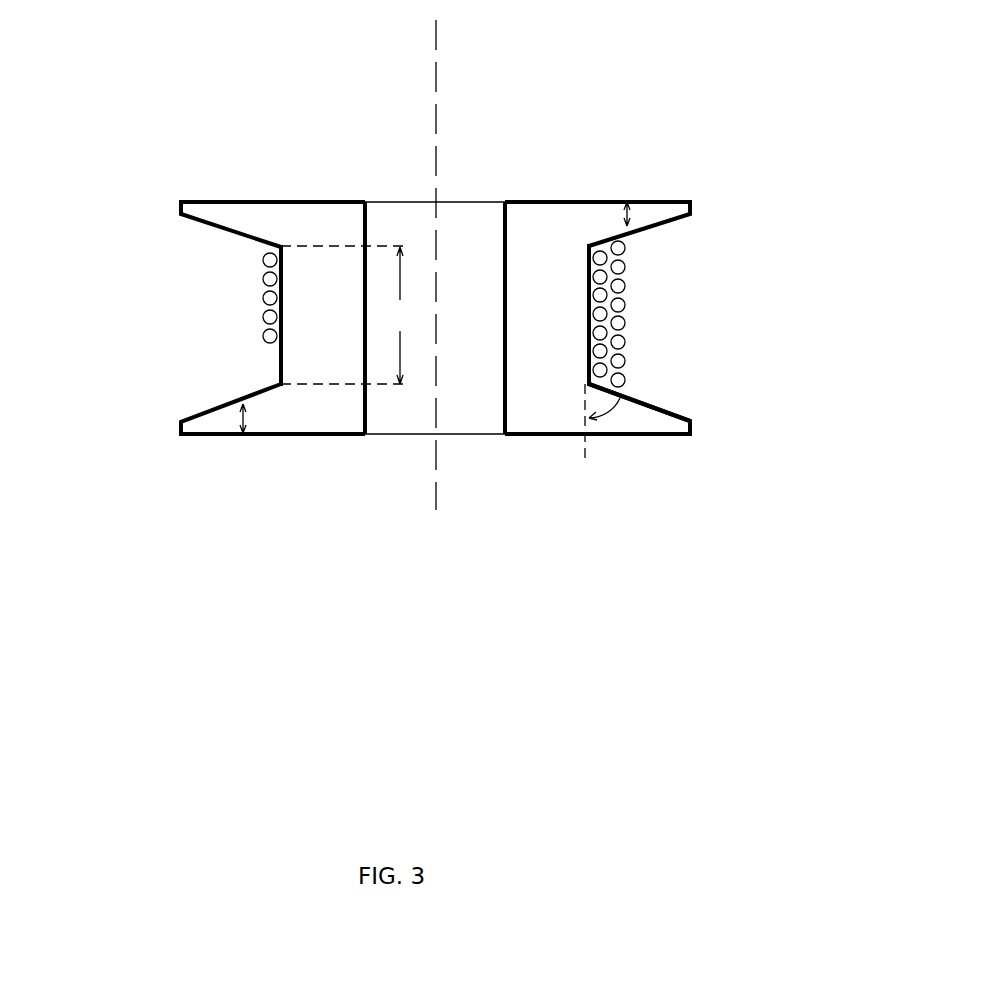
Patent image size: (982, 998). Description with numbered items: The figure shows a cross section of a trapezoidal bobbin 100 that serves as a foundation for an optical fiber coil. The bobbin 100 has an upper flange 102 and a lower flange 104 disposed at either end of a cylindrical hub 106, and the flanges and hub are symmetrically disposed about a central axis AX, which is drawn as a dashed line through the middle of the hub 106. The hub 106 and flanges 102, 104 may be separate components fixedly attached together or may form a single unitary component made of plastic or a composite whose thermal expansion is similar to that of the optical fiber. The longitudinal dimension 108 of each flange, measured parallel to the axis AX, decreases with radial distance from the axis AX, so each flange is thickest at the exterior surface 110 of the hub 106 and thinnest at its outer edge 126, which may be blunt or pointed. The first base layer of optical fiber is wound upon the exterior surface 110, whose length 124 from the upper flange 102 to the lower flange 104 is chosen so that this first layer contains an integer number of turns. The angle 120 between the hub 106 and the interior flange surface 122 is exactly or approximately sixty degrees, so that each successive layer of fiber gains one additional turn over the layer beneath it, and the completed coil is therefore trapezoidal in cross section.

The central axis AX is at (436, 68).
The trapezoidal bobbin 100 is at (779, 592).
The upper flange 102 is at (323, 227).
The lower flange 104 is at (285, 420).
The cylindrical hub 106 is at (327, 337).
The longitudinal dimension 108 is at (228, 420).
The exterior surface 110 is at (279, 378).
The angle 120 is at (607, 422).
The interior flange surface 122 is at (650, 400).
The length 124 is at (352, 315).
The outer edge 126 is at (180, 205).